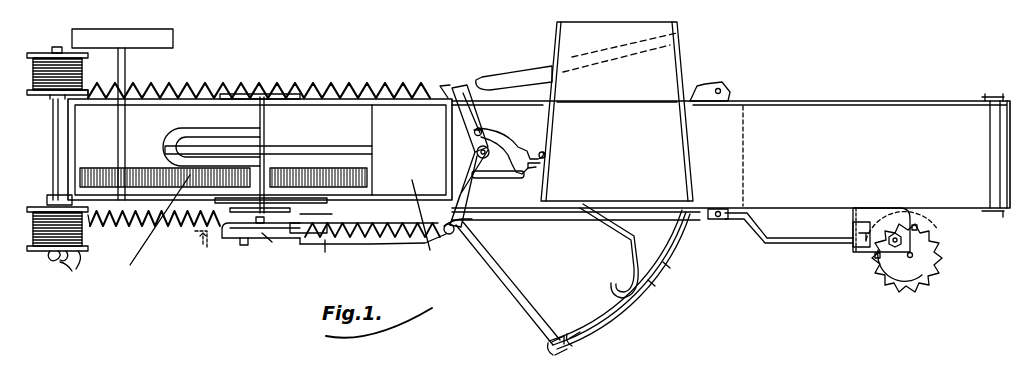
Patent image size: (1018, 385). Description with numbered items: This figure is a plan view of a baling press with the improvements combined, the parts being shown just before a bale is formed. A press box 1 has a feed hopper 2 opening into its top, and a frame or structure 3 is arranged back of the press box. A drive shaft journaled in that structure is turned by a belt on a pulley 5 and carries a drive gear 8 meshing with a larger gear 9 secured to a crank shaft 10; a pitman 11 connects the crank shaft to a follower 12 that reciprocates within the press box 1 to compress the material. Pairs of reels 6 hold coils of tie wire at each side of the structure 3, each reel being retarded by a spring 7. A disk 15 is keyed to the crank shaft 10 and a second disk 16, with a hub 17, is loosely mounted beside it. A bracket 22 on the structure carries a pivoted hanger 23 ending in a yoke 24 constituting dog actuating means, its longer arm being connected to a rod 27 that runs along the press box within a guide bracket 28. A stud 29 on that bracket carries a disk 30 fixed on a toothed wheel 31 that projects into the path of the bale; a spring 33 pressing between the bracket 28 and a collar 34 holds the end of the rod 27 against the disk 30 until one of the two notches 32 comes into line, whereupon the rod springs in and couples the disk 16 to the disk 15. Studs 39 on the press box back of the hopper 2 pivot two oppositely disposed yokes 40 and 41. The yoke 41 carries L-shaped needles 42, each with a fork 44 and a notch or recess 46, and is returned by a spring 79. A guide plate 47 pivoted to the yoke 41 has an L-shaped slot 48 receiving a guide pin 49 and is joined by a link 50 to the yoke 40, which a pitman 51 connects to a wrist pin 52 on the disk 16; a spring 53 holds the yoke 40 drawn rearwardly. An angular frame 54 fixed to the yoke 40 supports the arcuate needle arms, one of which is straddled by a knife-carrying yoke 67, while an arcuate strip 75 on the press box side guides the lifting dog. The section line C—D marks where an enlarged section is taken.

The press box 1 is at (798, 104).
The feed hopper 2 is at (640, 30).
The frame or structure 3 is at (322, 103).
The pulley 5 is at (160, 40).
The reels 6 is at (30, 208).
The spring 7 is at (126, 125).
The drive gear 8 is at (99, 168).
The larger gear 9 is at (153, 231).
The crank shaft 10 is at (266, 131).
The pitman 11 is at (208, 140).
The follower 12 is at (377, 225).
The disk 15 is at (330, 211).
The disk 16 is at (258, 240).
The hub 17 is at (270, 243).
The bracket 22 is at (244, 94).
The hanger 23 is at (222, 243).
The yoke 24 is at (300, 246).
The rod 27 is at (553, 222).
The guide bracket 28 is at (862, 213).
The stud 29 is at (904, 232).
The disk 30 is at (905, 260).
The toothed wheel 31 is at (943, 260).
The notches 32 is at (920, 227).
The spring 33 is at (856, 246).
The collar 34 is at (890, 233).
The studs 39 is at (482, 133).
The yoke 40 is at (468, 223).
The yoke 41 is at (465, 92).
The L-shaped needles 42 is at (530, 80).
The fork 44 is at (728, 92).
The notch or recess 46 is at (700, 88).
The guide plate 47 is at (520, 145).
The L-shaped slot 48 is at (538, 170).
The guide pin 49 is at (546, 155).
The link 50 is at (488, 178).
The pitman 51 is at (290, 240).
The wrist pin 52 is at (244, 246).
The spring 53 is at (150, 210).
The angular frame 54 is at (525, 318).
The yoke 67 is at (692, 236).
The arcuate strip 75 is at (616, 293).
The spring 79 is at (308, 86).
The section line C—D C is at (195, 248).
The section line C— D is at (321, 257).